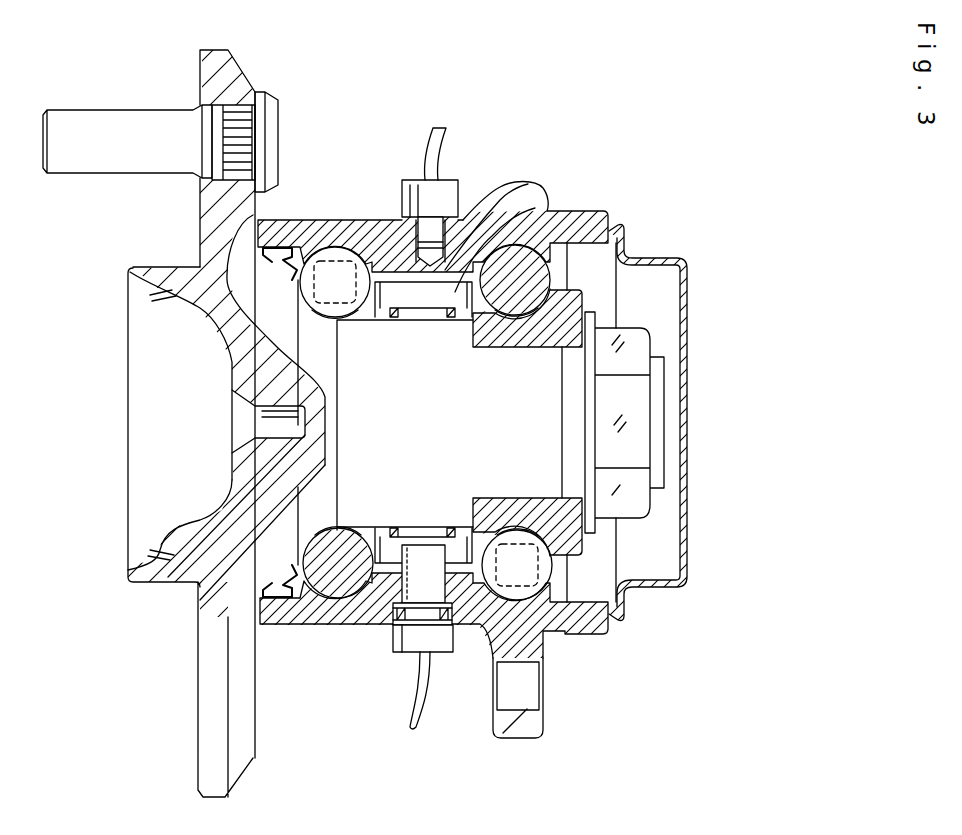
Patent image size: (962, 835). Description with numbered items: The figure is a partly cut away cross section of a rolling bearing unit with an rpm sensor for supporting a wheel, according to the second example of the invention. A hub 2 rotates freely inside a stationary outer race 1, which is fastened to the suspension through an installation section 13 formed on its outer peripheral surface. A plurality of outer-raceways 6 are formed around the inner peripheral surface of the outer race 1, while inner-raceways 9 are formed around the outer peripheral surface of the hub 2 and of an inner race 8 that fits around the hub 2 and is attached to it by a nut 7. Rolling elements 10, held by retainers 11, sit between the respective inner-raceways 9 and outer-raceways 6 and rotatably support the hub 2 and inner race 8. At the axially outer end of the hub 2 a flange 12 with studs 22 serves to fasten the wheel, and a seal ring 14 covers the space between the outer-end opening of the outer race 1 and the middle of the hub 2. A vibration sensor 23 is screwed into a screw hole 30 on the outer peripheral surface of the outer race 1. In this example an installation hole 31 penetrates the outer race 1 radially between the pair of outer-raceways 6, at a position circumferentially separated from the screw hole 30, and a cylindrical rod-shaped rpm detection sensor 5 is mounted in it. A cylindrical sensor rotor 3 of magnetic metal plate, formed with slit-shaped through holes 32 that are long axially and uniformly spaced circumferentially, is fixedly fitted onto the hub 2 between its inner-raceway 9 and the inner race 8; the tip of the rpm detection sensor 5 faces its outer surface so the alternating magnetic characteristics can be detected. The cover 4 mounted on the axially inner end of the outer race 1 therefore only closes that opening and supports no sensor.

The outer race 1 is at (372, 616).
The hub 2 is at (153, 572).
The sensor rotor 3 is at (543, 212).
The cover 4 is at (688, 333).
The rpm detection sensor 5 is at (430, 595).
The outer-raceways 6 is at (342, 250).
The nut 7 is at (635, 413).
The inner race 8 is at (563, 545).
The inner-raceways 9 is at (338, 528).
The rolling elements 10 is at (338, 315).
The retainers 11 is at (560, 273).
The flange 12 is at (233, 70).
The installation section 13 is at (517, 738).
The seal ring 14 is at (255, 595).
The studs 22 is at (127, 125).
The vibration sensor 23 is at (418, 188).
The screw hole 30 is at (447, 235).
The installation hole 31 is at (398, 652).
The through holes 32 is at (410, 312).